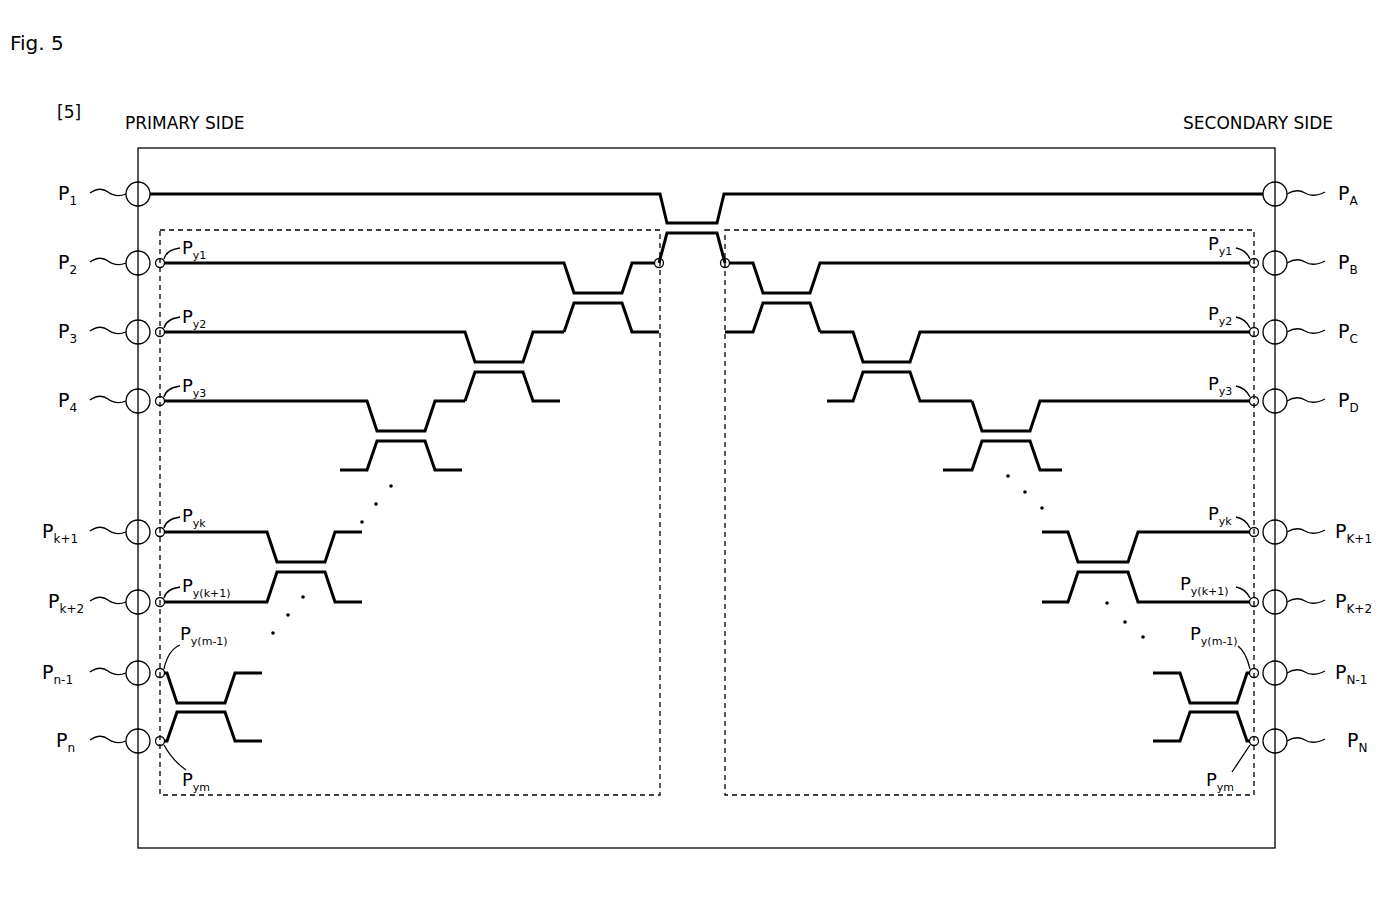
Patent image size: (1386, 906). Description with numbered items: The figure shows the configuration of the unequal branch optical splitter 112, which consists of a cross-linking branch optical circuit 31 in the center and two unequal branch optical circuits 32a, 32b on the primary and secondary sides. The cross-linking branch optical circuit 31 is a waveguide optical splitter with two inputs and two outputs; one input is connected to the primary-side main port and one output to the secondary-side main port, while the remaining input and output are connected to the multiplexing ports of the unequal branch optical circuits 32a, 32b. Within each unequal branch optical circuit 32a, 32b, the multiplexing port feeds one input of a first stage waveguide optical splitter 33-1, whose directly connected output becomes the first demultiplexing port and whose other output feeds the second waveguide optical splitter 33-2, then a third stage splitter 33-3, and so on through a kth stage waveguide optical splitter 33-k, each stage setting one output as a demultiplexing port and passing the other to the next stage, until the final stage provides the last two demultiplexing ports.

The unequal branch optical splitter 112 is at (973, 148).
The cross-linking branch optical circuit 31 is at (693, 270).
The unequal branch optical circuit 32a is at (455, 797).
The unequal branch optical circuit 32b is at (870, 797).
The first stage waveguide optical splitter 33-1 is at (600, 312).
The second waveguide optical splitter 33-2 is at (500, 381).
The third stage waveguide optical splitter 33-3 is at (414, 451).
The kth stage waveguide optical splitter 33-k is at (314, 585).